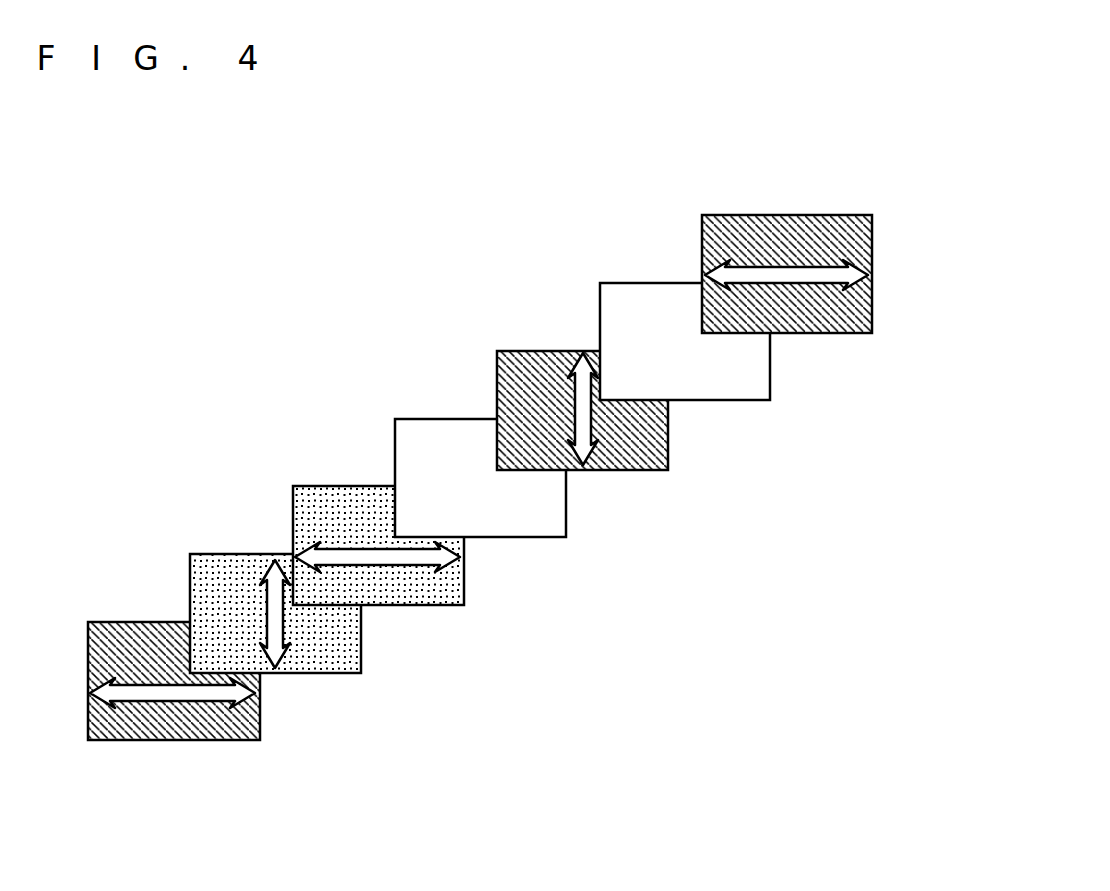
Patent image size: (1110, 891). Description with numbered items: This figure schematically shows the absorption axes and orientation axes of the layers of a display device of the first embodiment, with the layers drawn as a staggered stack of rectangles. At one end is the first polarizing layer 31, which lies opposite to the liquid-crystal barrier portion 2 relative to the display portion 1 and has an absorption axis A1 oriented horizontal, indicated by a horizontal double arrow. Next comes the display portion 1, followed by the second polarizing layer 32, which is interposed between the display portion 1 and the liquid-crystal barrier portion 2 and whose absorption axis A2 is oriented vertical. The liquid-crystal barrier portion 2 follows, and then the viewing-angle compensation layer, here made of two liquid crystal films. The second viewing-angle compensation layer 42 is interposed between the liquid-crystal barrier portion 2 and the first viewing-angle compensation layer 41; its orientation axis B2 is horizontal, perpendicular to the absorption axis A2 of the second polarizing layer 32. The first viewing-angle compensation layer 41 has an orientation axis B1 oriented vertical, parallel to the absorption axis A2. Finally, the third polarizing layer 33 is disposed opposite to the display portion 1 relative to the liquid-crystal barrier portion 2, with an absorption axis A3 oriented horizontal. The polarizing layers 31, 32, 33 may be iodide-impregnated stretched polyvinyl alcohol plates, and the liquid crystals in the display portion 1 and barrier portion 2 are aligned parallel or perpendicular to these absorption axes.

The display portion 1 is at (740, 388).
The liquid-crystal barrier portion 2 is at (530, 525).
The first polarizing layer 31 is at (846, 322).
The second polarizing layer 32 is at (637, 458).
The third polarizing layer 33 is at (213, 732).
The first viewing-angle compensation layer 41 is at (320, 663).
The second viewing-angle compensation layer 42 is at (425, 595).
The absorption axis A1 is at (777, 277).
The absorption axis A2 is at (578, 403).
The absorption axis A3 is at (132, 693).
The orientation axis B1 is at (273, 615).
The orientation axis B2 is at (338, 557).